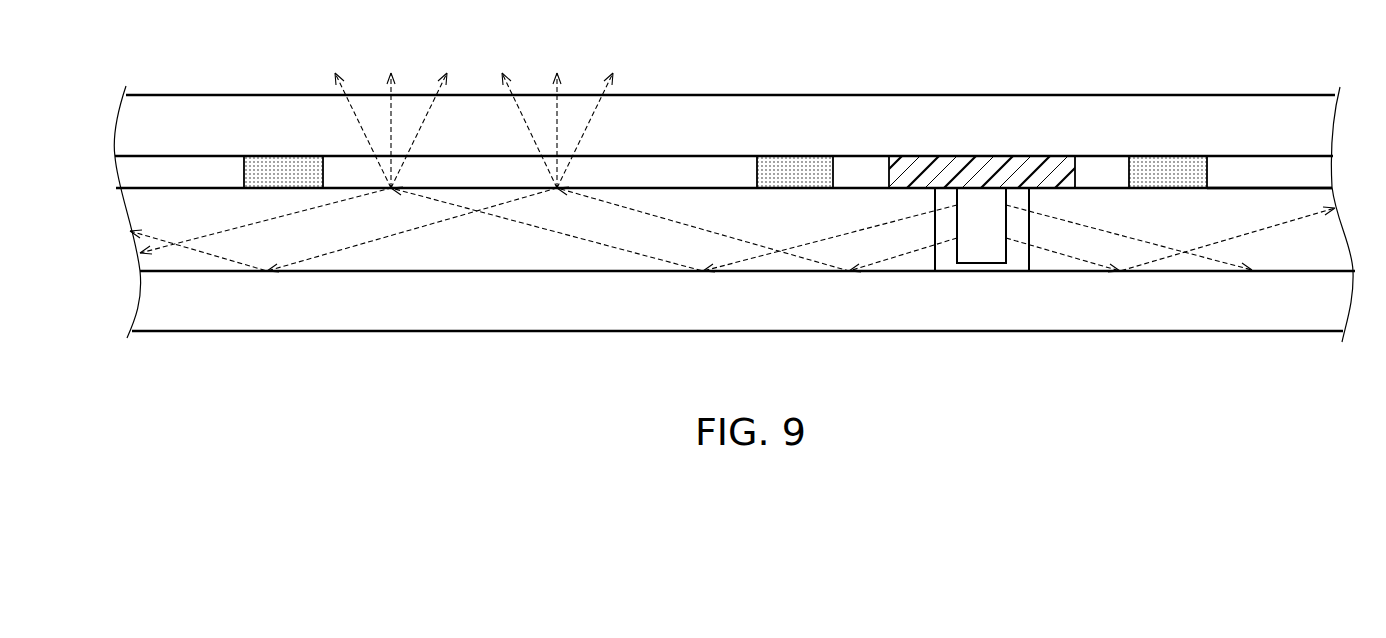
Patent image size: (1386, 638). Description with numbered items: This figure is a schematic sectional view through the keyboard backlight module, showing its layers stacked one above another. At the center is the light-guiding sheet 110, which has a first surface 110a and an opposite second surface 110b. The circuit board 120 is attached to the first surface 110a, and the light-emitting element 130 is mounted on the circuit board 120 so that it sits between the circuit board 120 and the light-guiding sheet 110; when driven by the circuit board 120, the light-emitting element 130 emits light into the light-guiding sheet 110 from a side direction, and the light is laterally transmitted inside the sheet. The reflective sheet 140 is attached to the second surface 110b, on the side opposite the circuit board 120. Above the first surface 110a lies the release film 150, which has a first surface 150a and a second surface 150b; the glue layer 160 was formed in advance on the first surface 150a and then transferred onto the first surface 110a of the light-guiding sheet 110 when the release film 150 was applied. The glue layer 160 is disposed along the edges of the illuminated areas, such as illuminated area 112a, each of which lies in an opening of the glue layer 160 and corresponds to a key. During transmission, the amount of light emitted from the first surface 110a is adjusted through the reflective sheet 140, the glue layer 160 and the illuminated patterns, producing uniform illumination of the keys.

The light-guiding sheet 110 is at (735, 215).
The first surface 110a is at (873, 188).
The second surface 110b is at (883, 272).
The illuminated area 112a is at (1242, 187).
The circuit board 120 is at (943, 170).
The light-emitting element 130 is at (975, 253).
The reflective sheet 140 is at (1127, 297).
The release film 150 is at (725, 109).
The first surface 150a is at (770, 172).
The second surface 150b is at (713, 95).
The glue layer 160 is at (1167, 163).